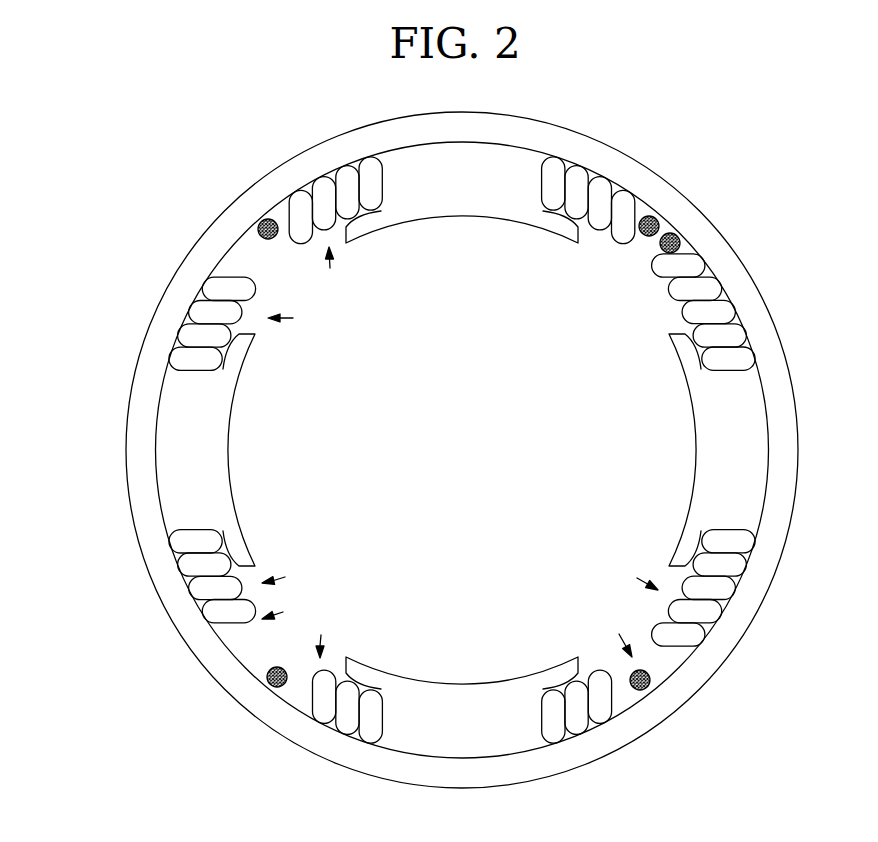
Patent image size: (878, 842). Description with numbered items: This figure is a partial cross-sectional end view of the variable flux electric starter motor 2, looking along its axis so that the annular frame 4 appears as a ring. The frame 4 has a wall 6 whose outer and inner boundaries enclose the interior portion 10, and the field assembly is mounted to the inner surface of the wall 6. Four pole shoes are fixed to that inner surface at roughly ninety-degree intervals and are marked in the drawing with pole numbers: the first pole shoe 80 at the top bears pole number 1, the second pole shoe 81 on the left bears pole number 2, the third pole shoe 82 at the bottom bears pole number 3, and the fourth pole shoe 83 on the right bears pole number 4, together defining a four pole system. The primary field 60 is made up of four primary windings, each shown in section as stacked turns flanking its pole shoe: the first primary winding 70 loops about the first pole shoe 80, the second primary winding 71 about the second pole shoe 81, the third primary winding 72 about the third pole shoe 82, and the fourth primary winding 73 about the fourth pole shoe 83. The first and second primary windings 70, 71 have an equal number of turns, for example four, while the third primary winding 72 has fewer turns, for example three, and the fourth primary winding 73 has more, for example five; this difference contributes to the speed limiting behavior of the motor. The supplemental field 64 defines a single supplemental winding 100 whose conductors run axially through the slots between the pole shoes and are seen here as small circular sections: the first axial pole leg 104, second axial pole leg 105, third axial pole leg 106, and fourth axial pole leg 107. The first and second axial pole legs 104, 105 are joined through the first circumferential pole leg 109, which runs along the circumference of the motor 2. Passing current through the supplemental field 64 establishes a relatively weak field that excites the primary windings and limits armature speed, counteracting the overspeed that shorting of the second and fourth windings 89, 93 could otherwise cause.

The first pole 1 is at (455, 188).
The variable flux electric starter motor 2 is at (189, 435).
The third pole 3 is at (443, 731).
The frame 4 is at (720, 491).
The wall 6 is at (134, 543).
The interior portion 10 is at (250, 620).
The primary field 60 is at (293, 318).
The supplemental field 64 is at (619, 634).
The first primary winding 70 is at (330, 268).
The second primary winding 71 is at (285, 577).
The third primary winding 72 is at (321, 635).
The fourth primary winding 73 is at (637, 578).
The first pole shoe 80 is at (498, 203).
The second pole shoe 81 is at (173, 450).
The third pole shoe 82 is at (483, 733).
The fourth pole shoe 83 is at (738, 450).
The second winding 89 is at (372, 723).
The fourth winding 93 is at (720, 590).
The supplemental winding 100 is at (644, 242).
The first axial pole leg 104 is at (656, 222).
The second axial pole leg 105 is at (652, 684).
The third axial pole leg 106 is at (269, 683).
The fourth axial pole leg 107 is at (261, 221).
The first circumferential pole leg 109 is at (682, 243).